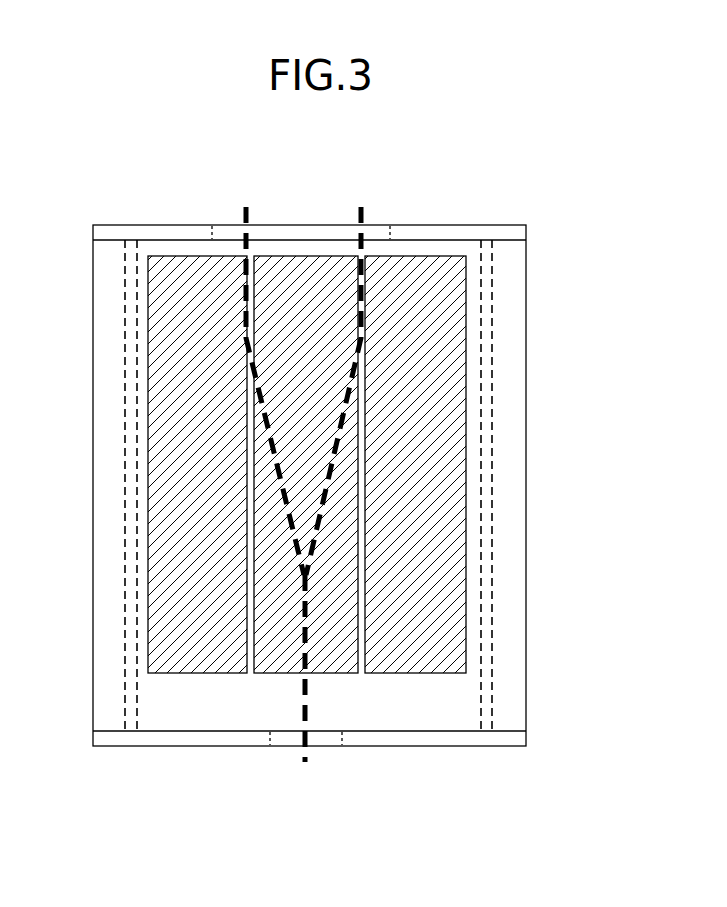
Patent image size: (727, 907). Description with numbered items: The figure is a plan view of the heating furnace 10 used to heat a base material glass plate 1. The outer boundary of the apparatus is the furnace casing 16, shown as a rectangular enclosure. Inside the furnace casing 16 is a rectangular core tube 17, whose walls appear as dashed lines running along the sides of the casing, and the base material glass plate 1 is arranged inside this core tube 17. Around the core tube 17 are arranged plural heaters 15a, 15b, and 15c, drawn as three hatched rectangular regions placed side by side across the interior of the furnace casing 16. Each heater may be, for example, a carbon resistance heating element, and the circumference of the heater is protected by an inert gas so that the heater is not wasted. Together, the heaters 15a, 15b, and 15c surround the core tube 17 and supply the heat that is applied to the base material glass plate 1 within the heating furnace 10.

The base material glass plate 1 is at (362, 207).
The heating furnace 10 is at (495, 196).
The heater 15a is at (183, 663).
The heater 15b is at (282, 663).
The heater 15c is at (430, 663).
The furnace casing 16 is at (526, 322).
The core tube 17 is at (493, 408).